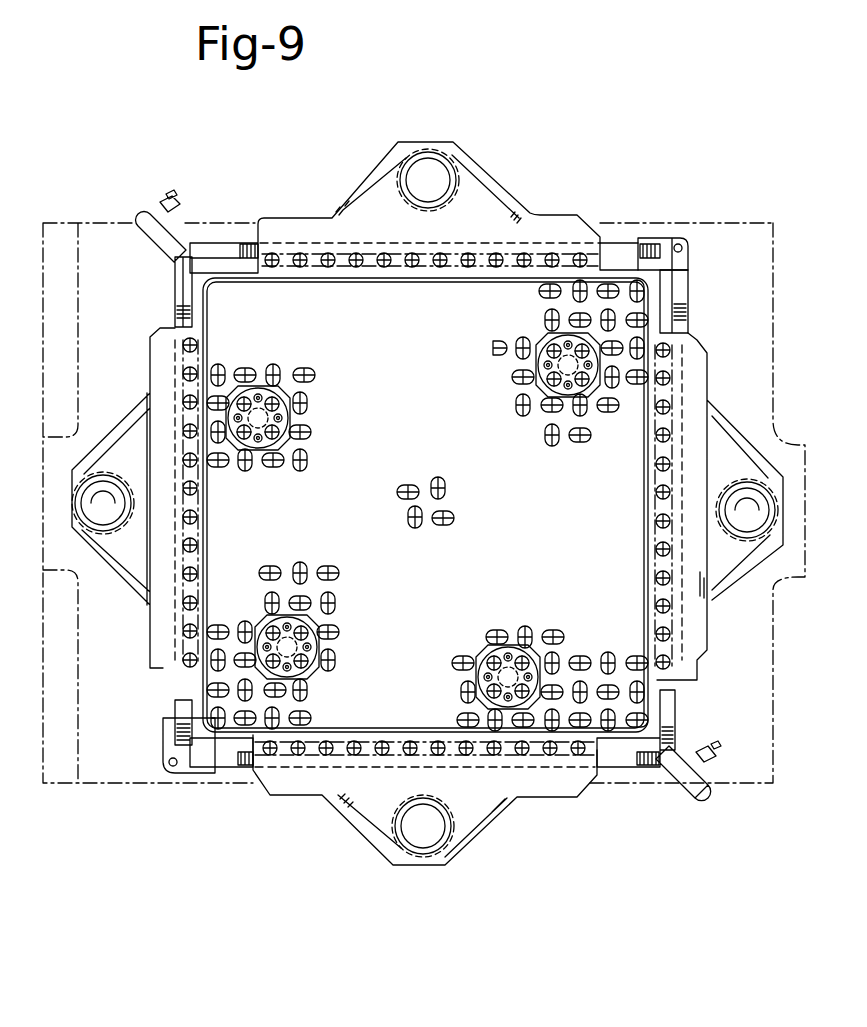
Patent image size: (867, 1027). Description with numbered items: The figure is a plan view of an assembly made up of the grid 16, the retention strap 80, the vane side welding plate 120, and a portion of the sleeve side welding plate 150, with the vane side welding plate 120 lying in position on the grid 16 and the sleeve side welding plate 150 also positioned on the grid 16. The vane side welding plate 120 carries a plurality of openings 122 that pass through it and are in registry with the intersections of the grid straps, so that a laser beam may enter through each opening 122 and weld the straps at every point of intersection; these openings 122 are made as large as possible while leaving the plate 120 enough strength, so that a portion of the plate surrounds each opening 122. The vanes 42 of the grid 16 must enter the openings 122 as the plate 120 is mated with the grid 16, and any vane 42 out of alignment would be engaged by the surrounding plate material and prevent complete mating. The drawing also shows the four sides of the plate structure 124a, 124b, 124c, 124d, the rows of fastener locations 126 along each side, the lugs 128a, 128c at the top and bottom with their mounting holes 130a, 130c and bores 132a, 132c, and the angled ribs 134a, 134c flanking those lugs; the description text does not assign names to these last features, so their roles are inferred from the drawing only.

The grid 16 is at (663, 247).
The vane 42 is at (292, 363).
The retention strap 80 is at (685, 303).
The vane side welding plate 120 is at (233, 258).
The openings 122 is at (312, 364).
The frame side member 124a is at (577, 212).
The frame side member 124b is at (693, 672).
The frame side member 124c is at (558, 792).
The frame side member 124d is at (157, 663).
The fastener holes 126 is at (275, 255).
The mounting boss 128a is at (473, 184).
The mounting boss 128c is at (480, 808).
The mounting hole 130a is at (445, 138).
The mounting hole 130c is at (397, 838).
The bore 132a is at (456, 162).
The bore 132c is at (448, 865).
The gusset rib 134a is at (375, 170).
The gusset rib 134c is at (357, 818).
The sleeve side welding plate 150 is at (723, 393).